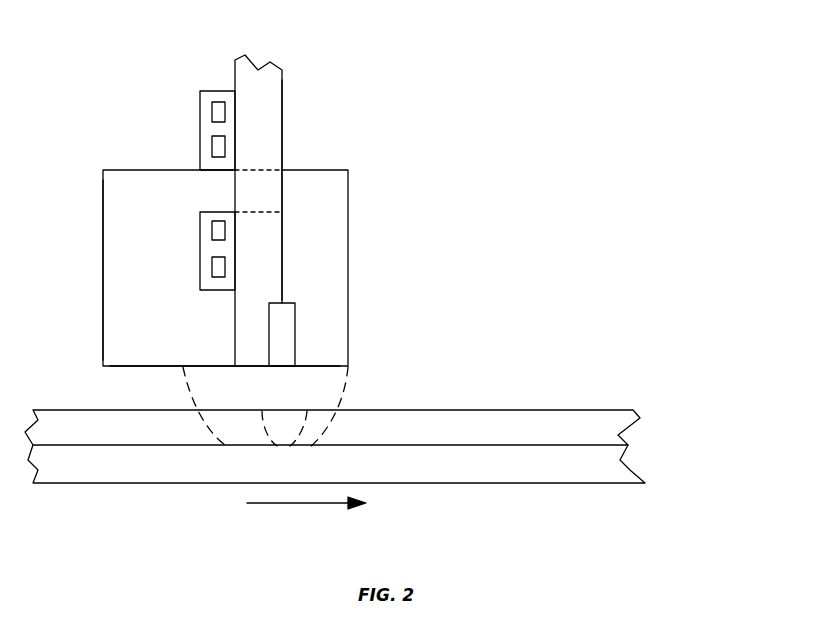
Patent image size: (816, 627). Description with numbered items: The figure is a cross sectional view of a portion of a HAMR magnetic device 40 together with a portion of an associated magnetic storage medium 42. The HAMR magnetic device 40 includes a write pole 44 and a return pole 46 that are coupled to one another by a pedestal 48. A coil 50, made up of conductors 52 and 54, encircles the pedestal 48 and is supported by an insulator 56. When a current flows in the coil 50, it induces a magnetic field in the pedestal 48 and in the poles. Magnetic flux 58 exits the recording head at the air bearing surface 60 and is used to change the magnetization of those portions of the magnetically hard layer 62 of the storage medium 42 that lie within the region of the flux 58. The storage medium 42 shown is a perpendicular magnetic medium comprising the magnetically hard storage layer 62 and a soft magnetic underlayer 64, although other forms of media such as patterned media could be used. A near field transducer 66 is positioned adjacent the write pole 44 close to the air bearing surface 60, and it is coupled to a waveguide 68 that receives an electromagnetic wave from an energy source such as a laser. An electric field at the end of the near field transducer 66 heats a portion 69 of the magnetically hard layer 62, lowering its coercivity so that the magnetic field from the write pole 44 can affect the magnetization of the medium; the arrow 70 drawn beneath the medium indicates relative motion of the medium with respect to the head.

The HAMR magnetic device 40 is at (452, 92).
The magnetic storage medium 42 is at (359, 426).
The write pole 44 is at (325, 215).
The return pole 46 is at (127, 302).
The pedestal 48 is at (263, 191).
The coil 50 is at (181, 91).
The conductor 52 is at (210, 268).
The conductor 54 is at (210, 147).
The insulator 56 is at (206, 95).
The magnetic flux 58 is at (340, 400).
The air bearing surface 60 is at (122, 366).
The magnetically hard storage layer 62 is at (590, 432).
The soft magnetic underlayer 64 is at (584, 460).
The near field transducer 66 is at (287, 327).
The waveguide 68 is at (253, 130).
The heated portion 69 is at (262, 437).
The travel direction 70 is at (305, 504).